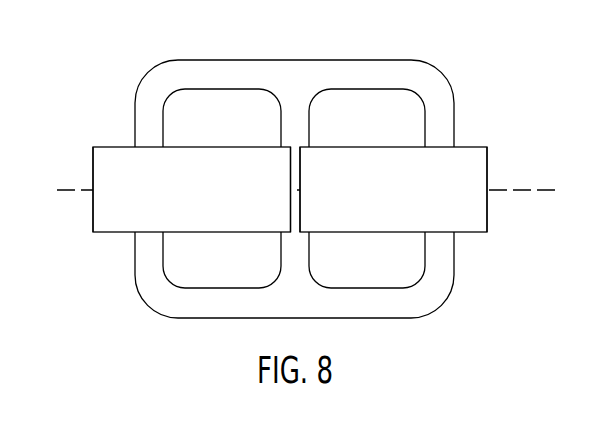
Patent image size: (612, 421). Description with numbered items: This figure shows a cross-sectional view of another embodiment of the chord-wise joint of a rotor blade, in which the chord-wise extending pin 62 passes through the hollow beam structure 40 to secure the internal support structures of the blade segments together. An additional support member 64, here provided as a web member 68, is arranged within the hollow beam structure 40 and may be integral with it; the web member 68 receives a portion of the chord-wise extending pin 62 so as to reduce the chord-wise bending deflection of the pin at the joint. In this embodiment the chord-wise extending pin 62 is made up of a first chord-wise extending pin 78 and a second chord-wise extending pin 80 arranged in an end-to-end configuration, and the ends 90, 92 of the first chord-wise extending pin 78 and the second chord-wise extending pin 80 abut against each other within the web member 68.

The beam structure 40 is at (417, 60).
The chord-wise extending pin 62 is at (112, 233).
The additional support member 64 is at (278, 243).
The web member 68 is at (311, 242).
The first chord-wise extending pin 78 is at (110, 147).
The second chord-wise extending pin 80 is at (464, 172).
The end of first chord-wise extending pin 90 is at (288, 173).
The end of second chord-wise extending pin 92 is at (300, 172).